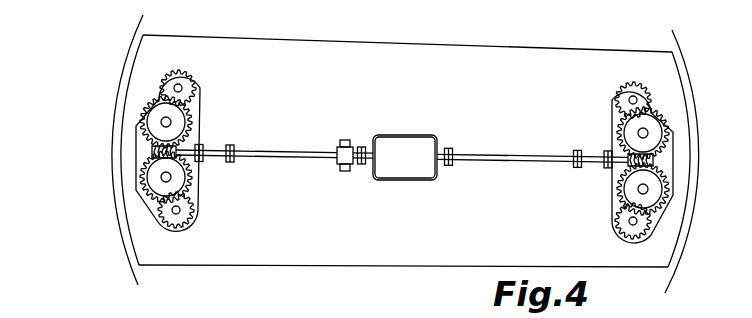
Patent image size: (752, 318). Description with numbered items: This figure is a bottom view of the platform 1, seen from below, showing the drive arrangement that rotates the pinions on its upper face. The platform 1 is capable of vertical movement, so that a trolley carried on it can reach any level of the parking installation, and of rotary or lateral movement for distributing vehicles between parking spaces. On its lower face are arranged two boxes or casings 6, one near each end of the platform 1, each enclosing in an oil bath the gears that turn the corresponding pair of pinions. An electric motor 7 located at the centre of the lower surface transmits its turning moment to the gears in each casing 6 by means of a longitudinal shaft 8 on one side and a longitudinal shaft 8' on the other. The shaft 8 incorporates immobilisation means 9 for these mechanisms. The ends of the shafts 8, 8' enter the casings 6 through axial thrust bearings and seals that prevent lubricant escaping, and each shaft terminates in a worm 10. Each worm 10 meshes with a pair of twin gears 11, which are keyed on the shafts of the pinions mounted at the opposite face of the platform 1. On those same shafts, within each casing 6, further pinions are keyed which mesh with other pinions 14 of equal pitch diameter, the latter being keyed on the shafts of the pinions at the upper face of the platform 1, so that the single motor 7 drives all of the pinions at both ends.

The platform 1 is at (313, 56).
The casing 6 is at (202, 90).
The electric motor 7 is at (412, 142).
The longitudinal shaft 8 is at (256, 145).
The longitudinal shaft 8' is at (532, 148).
The immobilisation means 9 is at (350, 147).
The worm 10 is at (152, 151).
The twin gear 11 is at (160, 118).
The pinion 14 is at (178, 72).